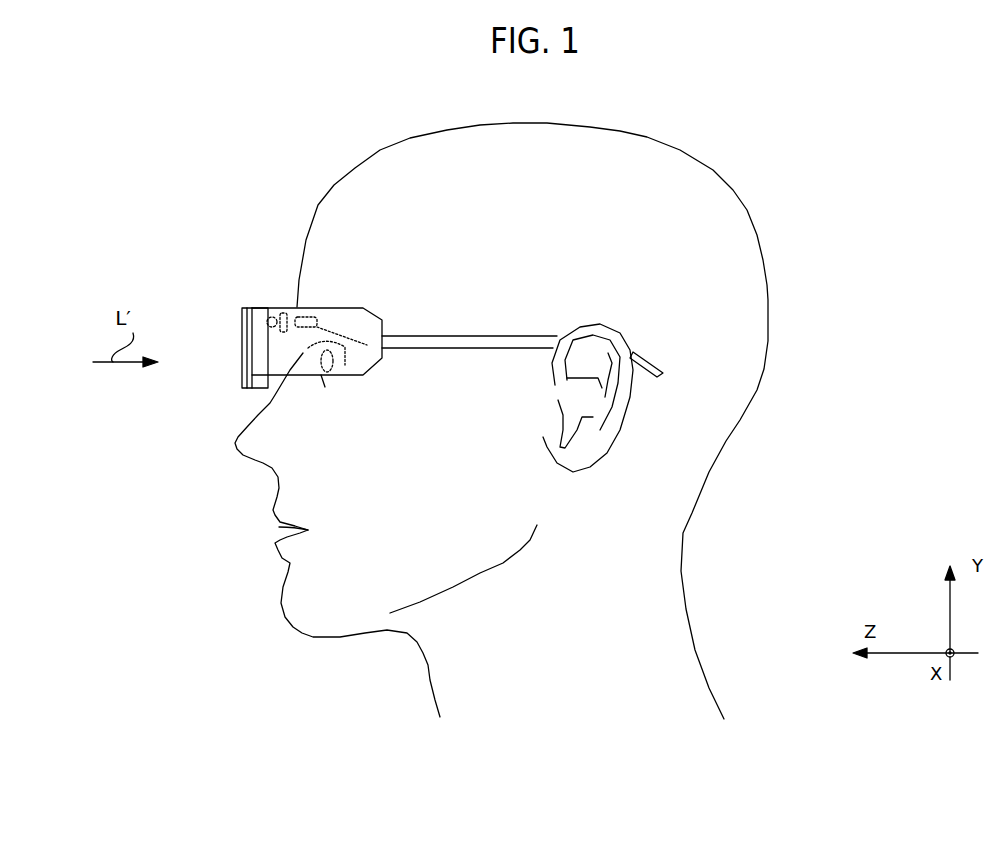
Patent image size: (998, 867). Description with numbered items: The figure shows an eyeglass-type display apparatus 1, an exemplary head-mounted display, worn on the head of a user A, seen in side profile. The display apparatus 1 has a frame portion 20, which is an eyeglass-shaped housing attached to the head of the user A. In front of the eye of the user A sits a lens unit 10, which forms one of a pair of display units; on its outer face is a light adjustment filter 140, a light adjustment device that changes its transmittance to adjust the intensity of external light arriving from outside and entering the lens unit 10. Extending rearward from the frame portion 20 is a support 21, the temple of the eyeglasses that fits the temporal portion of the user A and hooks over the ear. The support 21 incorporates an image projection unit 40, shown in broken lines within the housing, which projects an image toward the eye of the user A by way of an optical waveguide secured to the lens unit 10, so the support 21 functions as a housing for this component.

The display apparatus 1 is at (418, 306).
The lens unit 10 is at (253, 390).
The frame portion 20 is at (353, 307).
The support 21 is at (408, 337).
The image projection unit 40 is at (260, 325).
The light adjustment filter 140 is at (242, 330).
The user A is at (700, 666).